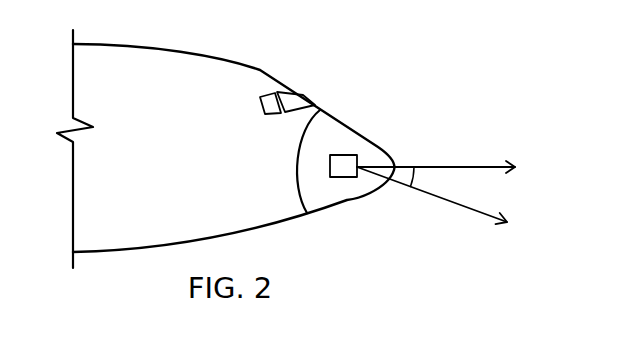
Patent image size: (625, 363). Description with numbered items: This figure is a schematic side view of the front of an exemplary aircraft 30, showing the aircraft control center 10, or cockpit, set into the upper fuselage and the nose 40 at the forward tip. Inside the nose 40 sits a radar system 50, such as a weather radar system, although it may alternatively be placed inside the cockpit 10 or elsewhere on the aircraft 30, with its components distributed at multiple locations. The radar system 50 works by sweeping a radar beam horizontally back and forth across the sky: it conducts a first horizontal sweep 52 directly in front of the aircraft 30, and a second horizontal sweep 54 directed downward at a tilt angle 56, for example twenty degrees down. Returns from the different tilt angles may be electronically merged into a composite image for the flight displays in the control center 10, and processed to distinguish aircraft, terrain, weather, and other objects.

The aircraft 30 is at (128, 57).
The aircraft control center 10 is at (300, 102).
The nose 40 is at (350, 140).
The radar system 50 is at (345, 177).
The first horizontal sweep 52 is at (485, 164).
The second horizontal sweep 54 is at (440, 198).
The tilt angle 56 is at (415, 174).